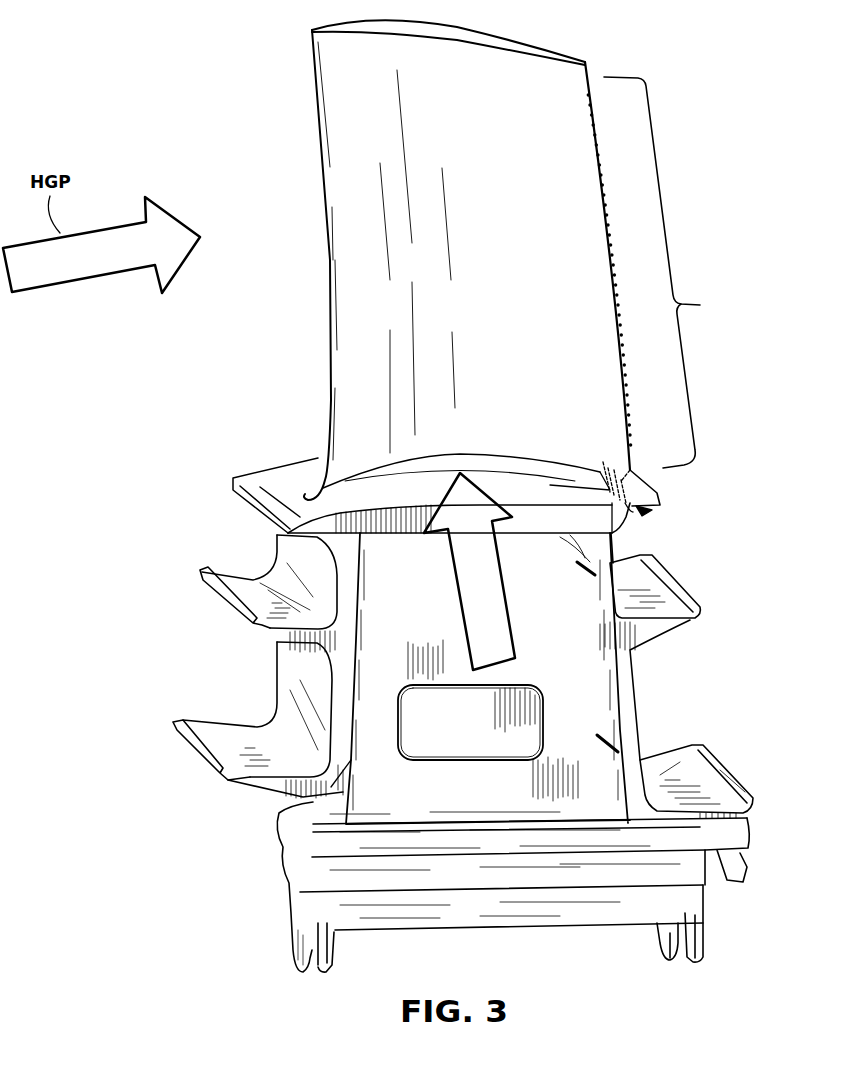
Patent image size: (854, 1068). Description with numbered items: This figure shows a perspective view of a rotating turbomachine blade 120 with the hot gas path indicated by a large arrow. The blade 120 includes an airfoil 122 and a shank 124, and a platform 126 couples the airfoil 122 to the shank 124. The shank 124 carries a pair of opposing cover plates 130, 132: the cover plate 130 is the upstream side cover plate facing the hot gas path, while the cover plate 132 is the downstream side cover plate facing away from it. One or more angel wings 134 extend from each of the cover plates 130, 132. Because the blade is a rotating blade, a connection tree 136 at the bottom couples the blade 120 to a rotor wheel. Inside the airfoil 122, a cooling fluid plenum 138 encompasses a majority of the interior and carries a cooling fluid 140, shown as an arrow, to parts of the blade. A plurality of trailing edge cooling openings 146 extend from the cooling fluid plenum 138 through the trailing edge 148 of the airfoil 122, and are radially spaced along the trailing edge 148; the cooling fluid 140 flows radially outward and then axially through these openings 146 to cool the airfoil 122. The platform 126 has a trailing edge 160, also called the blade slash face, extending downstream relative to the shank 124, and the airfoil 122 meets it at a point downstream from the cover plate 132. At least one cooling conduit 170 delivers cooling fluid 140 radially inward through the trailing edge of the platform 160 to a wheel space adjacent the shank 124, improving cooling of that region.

The turbomachine blade 120 is at (292, 375).
The airfoil 122 is at (543, 202).
The shank 124 is at (560, 596).
The platform 126 is at (280, 490).
The cover plate 130 is at (280, 672).
The cover plate 132 is at (655, 698).
The angel wings 134 is at (260, 603).
The connection tree 136 is at (353, 877).
The cooling fluid plenum 138 is at (330, 270).
The cooling fluid 140 is at (455, 572).
The trailing edge cooling openings 146 is at (679, 272).
The trailing edge 148 is at (613, 238).
The trailing edge of the platform 160 is at (630, 497).
The cooling conduit 170 is at (640, 512).